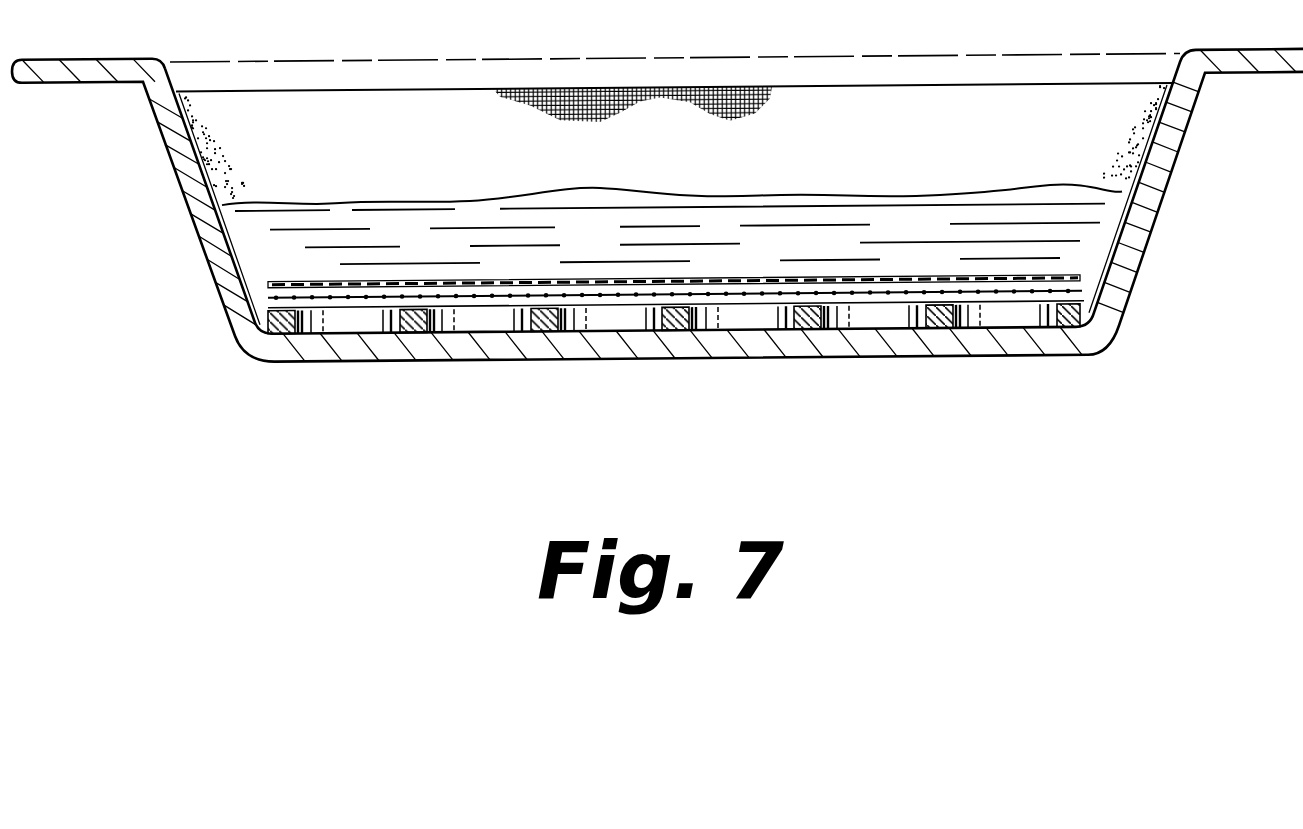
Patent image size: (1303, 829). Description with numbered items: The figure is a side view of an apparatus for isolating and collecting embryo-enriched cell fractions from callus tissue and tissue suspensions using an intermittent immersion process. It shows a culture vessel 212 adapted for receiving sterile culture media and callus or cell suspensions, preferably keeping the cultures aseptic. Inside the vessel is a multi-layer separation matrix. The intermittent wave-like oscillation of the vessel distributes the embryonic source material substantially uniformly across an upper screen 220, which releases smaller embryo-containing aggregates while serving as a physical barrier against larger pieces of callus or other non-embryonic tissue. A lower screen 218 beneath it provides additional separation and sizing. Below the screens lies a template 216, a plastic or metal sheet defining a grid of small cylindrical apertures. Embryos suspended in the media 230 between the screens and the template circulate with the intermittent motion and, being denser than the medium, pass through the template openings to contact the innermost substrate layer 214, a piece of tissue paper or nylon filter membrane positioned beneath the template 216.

The culture vessel 212 is at (1154, 226).
The substrate layer 214 is at (488, 340).
The template 216 is at (544, 326).
The lower screen 218 is at (738, 303).
The upper screen 220 is at (848, 293).
The liquid 230 is at (371, 221).